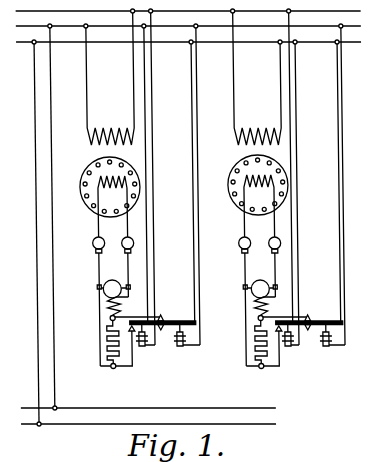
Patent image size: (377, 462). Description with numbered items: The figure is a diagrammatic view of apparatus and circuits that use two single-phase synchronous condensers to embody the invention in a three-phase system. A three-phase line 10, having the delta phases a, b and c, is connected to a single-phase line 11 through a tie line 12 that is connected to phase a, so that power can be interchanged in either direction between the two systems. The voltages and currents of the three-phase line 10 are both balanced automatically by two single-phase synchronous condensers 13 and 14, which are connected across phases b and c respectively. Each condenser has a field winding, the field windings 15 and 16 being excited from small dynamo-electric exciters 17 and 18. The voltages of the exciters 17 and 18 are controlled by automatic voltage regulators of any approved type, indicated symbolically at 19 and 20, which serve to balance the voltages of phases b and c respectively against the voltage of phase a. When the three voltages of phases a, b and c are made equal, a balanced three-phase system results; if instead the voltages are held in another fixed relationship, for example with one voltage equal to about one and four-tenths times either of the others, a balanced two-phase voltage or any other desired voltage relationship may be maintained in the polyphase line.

The three-phase line 10 is at (68, 37).
The single-phase line 11 is at (97, 388).
The tie line 12 is at (47, 337).
The single-phase synchronous condenser 13 is at (80, 175).
The single-phase synchronous condenser 14 is at (250, 183).
The field winding 15 is at (110, 193).
The field winding 16 is at (241, 206).
The dynamo-electric exciter 17 is at (105, 290).
The dynamo-electric exciter 18 is at (247, 300).
The automatic voltage regulator 19 is at (170, 371).
The automatic voltage regulator 20 is at (304, 344).
The delta phase a is at (52, 97).
The delta phase b is at (118, 70).
The delta phase c is at (273, 78).